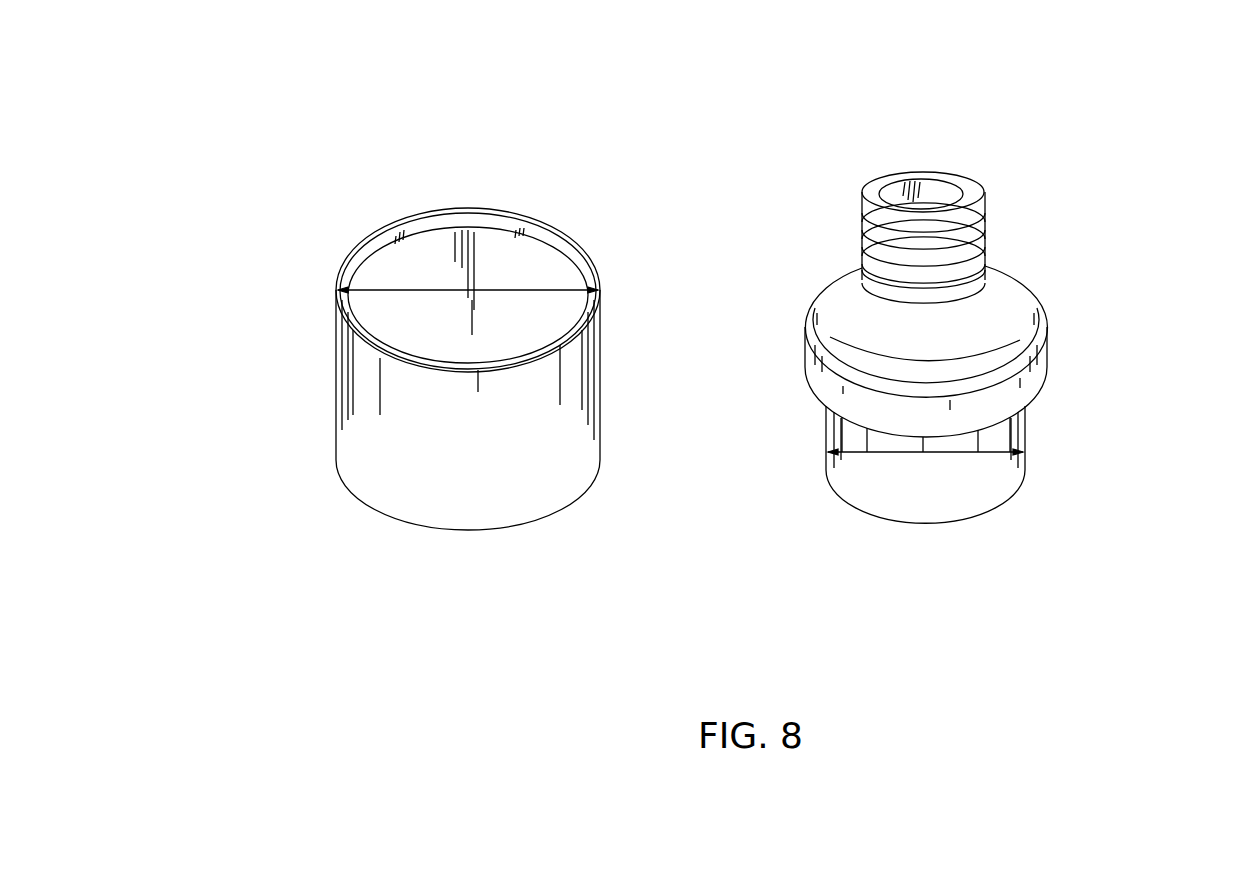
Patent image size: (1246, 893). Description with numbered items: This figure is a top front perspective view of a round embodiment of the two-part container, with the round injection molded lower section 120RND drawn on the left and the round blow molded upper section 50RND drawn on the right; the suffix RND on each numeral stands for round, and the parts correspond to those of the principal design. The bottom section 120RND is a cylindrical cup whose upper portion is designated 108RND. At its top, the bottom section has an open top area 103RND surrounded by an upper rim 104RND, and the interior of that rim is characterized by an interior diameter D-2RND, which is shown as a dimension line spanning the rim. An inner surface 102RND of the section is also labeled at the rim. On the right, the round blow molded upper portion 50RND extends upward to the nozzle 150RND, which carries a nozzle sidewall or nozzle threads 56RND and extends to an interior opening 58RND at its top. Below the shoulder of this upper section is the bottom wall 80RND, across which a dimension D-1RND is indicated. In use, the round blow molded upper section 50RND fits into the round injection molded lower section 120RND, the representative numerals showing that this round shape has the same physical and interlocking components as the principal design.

The upper portion 108RND is at (553, 195).
The upper rim 104RND is at (453, 208).
The open top area 103RND is at (557, 306).
The inner surface of cap 102RND is at (538, 254).
The interior diameter D-2RND is at (372, 290).
The round injection molded lower section 120RND is at (318, 443).
The round blow molded upper section 50RND is at (1085, 372).
The nozzle 150RND is at (908, 143).
The interior opening 58RND is at (947, 193).
The nozzle threads 56RND is at (985, 221).
The bottom wall 80RND is at (1003, 497).
The body diameter D-1RND is at (905, 452).